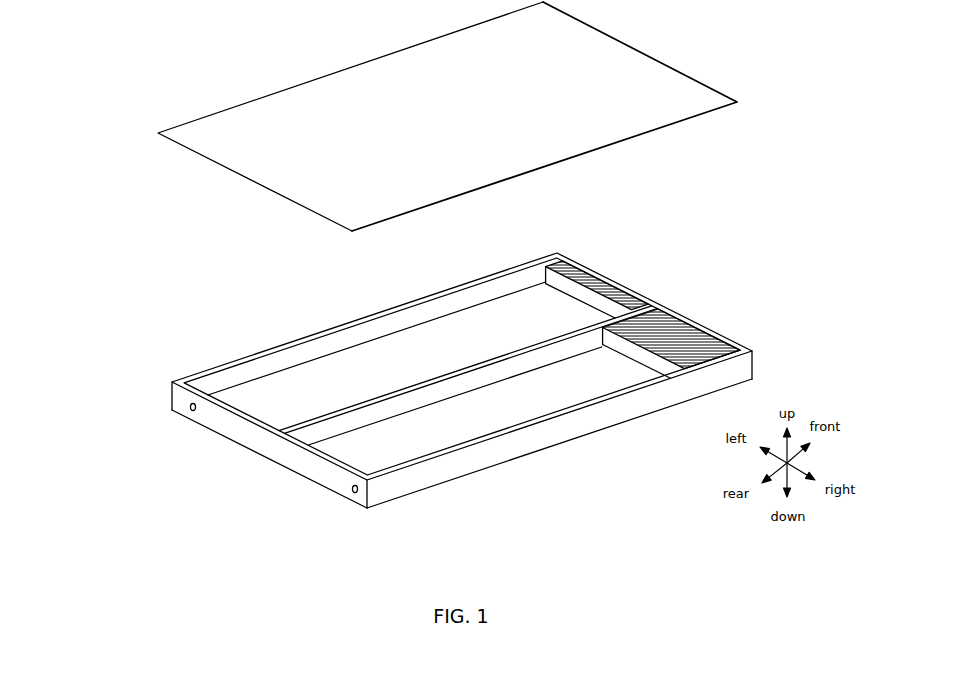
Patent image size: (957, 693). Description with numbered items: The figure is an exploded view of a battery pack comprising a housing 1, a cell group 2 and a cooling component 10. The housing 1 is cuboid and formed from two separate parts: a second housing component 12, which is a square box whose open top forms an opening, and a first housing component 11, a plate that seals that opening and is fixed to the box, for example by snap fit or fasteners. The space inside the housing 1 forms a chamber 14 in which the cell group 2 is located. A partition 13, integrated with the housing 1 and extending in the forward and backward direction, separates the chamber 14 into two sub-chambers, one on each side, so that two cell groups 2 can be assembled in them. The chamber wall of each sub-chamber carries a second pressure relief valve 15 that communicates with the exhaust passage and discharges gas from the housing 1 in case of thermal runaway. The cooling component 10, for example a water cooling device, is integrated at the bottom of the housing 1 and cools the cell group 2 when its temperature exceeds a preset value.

The housing 1 is at (98, 255).
The cell group 2 is at (681, 343).
The cooling component 10 is at (563, 443).
The first housing component 11 is at (233, 173).
The second housing component 12 is at (428, 403).
The partition 13 is at (468, 380).
The chamber 14 is at (268, 405).
The second pressure relief valve 15 is at (355, 495).